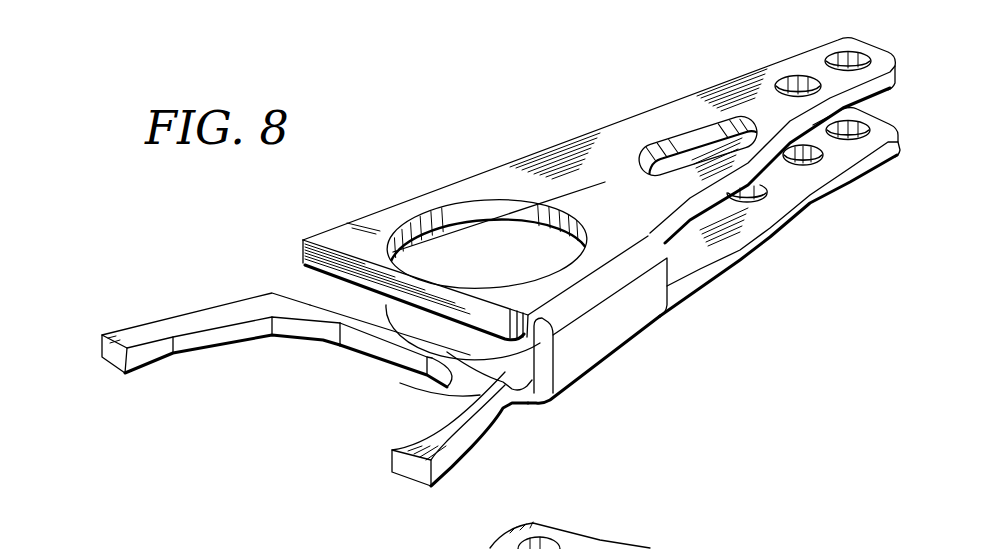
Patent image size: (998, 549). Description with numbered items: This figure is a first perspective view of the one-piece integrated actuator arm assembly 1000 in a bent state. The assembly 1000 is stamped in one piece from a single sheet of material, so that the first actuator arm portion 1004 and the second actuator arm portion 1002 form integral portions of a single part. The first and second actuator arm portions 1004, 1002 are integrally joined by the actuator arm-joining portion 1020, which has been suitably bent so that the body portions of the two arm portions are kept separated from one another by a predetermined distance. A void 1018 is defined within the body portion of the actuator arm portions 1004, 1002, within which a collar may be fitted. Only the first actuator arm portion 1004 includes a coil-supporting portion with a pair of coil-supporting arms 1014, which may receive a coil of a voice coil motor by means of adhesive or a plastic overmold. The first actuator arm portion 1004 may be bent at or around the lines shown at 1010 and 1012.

The one-piece integrated actuator arm assembly 1000 is at (978, 114).
The second actuator arm portion 1002 is at (662, 92).
The first actuator arm portion 1004 is at (823, 208).
The bend line 1010 is at (518, 412).
The bend line 1012 is at (432, 400).
The coil-supporting arms 1014 is at (175, 313).
The void 1018 is at (455, 252).
The actuator arm-joining portion 1020 is at (618, 328).